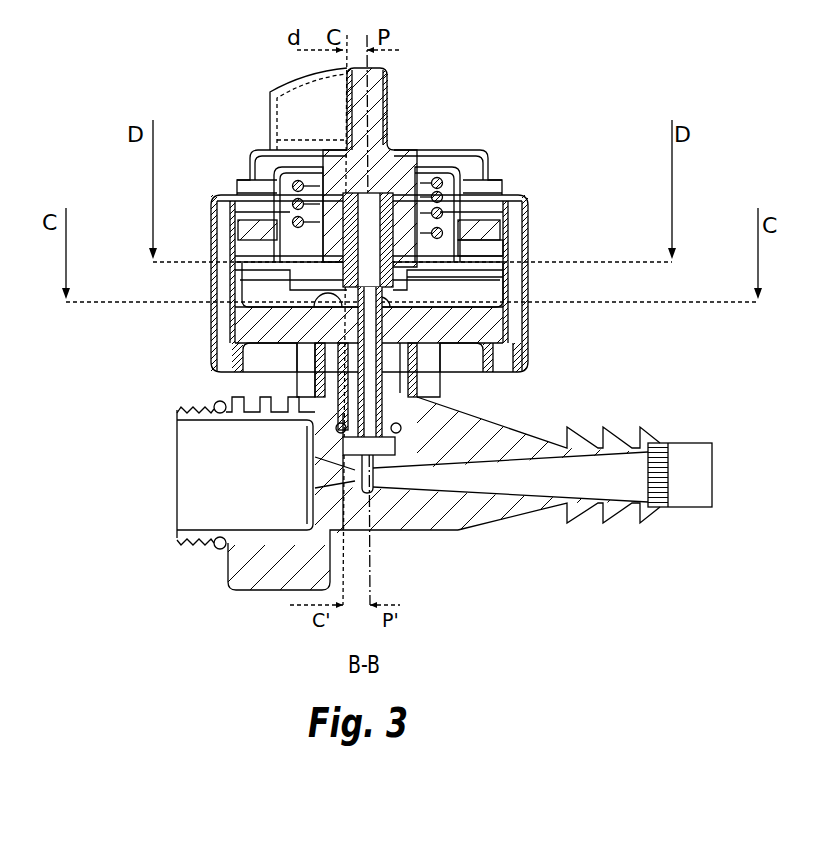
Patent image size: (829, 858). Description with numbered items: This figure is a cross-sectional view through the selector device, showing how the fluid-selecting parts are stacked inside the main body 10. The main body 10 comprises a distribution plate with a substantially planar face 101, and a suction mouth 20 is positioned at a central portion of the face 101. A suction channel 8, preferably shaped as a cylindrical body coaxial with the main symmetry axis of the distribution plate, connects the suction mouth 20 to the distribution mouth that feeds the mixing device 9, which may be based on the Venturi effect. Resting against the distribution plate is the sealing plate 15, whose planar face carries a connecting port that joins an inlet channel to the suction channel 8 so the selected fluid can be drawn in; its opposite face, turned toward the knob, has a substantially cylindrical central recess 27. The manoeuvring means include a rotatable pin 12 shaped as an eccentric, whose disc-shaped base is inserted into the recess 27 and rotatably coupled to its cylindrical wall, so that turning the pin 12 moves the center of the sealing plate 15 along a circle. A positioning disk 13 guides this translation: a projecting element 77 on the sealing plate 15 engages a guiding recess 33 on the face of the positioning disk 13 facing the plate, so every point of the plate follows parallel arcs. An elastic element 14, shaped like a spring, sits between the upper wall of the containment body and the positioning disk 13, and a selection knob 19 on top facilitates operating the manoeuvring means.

The suction channel 8 is at (382, 405).
The mixing device 9 is at (517, 432).
The main body 10 is at (233, 345).
The rotatable pin 12 is at (290, 283).
The positioning disk 13 is at (525, 235).
The elastic element 14 is at (455, 175).
The sealing plate 15 is at (432, 290).
The selection knob 19 is at (388, 108).
The suction mouth 20 is at (367, 308).
The central recess 27 is at (287, 279).
The guiding recess 33 is at (527, 257).
The projecting element 77 is at (508, 276).
The planar face 101 is at (508, 327).